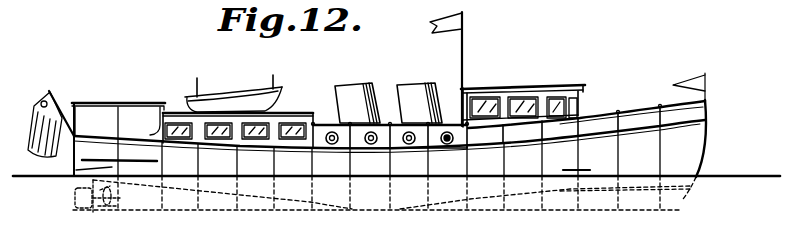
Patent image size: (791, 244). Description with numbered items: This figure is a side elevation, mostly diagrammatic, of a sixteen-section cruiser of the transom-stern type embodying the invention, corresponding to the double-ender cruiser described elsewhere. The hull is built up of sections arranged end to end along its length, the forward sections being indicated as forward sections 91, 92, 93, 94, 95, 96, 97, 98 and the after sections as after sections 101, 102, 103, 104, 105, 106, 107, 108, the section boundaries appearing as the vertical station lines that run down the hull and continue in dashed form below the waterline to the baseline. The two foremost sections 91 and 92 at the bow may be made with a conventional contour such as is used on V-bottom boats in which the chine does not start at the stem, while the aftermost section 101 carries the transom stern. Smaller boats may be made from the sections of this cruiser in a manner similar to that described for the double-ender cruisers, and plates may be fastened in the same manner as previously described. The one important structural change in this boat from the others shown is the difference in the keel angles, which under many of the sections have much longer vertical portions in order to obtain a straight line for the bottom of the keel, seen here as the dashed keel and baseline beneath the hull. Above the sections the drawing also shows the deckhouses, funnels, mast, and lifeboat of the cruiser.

The forward section 91 is at (678, 196).
The forward section 92 is at (637, 200).
The forward section 93 is at (593, 200).
The forward section 94 is at (552, 200).
The forward section 95 is at (518, 200).
The forward section 96 is at (487, 200).
The forward section 97 is at (452, 200).
The forward section 98 is at (415, 205).
The after section 101 is at (75, 178).
The after section 102 is at (140, 203).
The after section 103 is at (178, 203).
The after section 104 is at (221, 203).
The after section 105 is at (255, 205).
The after section 106 is at (297, 205).
The after section 107 is at (337, 205).
The after section 108 is at (382, 205).